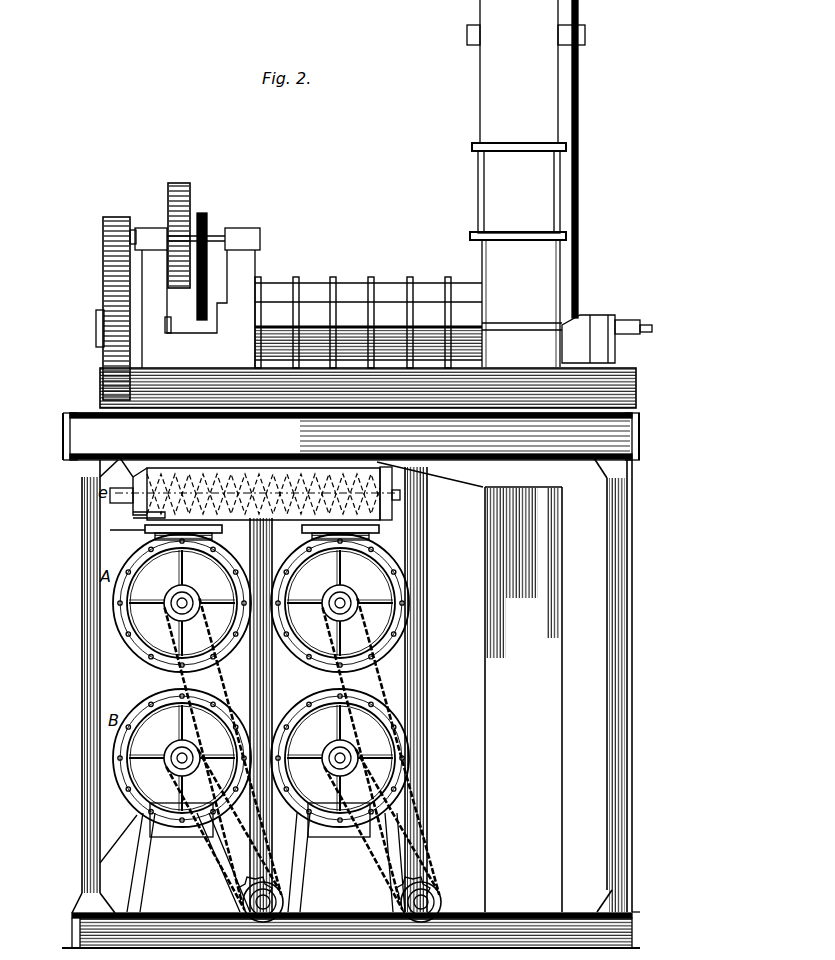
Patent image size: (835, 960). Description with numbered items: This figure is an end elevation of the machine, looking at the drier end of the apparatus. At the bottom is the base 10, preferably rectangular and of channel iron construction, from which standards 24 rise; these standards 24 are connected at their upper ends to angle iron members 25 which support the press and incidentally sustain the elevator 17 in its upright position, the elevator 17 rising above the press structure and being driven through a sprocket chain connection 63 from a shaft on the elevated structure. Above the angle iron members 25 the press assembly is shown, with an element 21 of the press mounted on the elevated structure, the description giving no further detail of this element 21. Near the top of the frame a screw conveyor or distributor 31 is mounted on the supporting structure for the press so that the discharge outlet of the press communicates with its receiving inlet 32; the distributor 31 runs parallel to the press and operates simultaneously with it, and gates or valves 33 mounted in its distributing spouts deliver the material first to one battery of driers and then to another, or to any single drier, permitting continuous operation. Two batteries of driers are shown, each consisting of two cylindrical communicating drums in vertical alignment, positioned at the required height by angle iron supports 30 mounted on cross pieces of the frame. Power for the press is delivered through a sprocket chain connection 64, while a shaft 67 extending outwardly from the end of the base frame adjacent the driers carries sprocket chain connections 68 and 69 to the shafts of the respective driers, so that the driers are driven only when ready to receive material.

The elevator 17 is at (526, 456).
The sprocket chain connection 63 is at (578, 160).
The sprocket chain connection 64 is at (207, 277).
The grate 21 is at (312, 290).
The angle iron members 25 is at (351, 436).
The receiving inlet 32 is at (255, 486).
The screw conveyor or distributor 31 is at (160, 518).
The gates or valves 33 is at (158, 520).
The standards 24 is at (128, 660).
The sprocket chain connection 68 is at (178, 685).
The sprocket chain connection 69 is at (215, 852).
The angle iron supports 30 is at (140, 880).
The shaft 67 is at (339, 911).
The base 10 is at (351, 930).